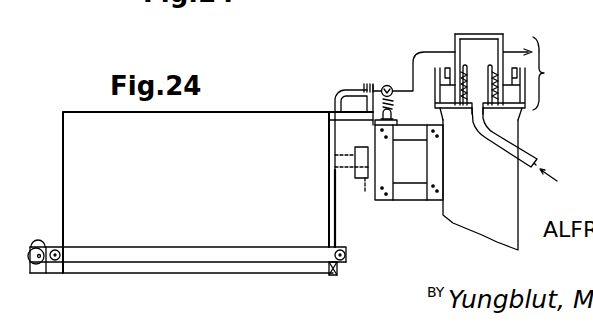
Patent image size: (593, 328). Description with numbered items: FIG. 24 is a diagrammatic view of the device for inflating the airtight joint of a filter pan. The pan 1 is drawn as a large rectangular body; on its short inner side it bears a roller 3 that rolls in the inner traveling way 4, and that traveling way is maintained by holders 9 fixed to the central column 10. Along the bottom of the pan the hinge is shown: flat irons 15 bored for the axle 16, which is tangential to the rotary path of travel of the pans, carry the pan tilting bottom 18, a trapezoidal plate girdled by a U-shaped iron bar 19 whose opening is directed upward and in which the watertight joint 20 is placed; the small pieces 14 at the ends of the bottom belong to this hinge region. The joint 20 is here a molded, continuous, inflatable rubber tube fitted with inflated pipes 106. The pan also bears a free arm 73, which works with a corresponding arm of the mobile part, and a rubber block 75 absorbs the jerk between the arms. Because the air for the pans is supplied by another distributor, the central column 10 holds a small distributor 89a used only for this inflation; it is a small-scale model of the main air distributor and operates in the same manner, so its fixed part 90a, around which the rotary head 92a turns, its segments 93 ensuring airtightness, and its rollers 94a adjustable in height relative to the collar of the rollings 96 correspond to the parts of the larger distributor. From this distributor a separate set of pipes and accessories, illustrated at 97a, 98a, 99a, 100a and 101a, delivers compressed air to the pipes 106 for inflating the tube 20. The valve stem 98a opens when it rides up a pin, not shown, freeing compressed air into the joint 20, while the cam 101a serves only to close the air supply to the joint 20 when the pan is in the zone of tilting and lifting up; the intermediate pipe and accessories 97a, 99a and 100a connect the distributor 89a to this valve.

The housing 1 is at (197, 194).
The roller 3 is at (361, 167).
The traveling way 4 is at (364, 194).
The holders 9 is at (402, 141).
The central column 10 is at (493, 188).
The bracket 14 is at (58, 263).
The flat irons 15 is at (33, 250).
The axle 16 is at (34, 260).
The pan tilting bottom 18 is at (187, 276).
The U-shaped iron bar 19 is at (55, 250).
The watertight joint 20 is at (55, 261).
The free arms 73 is at (370, 107).
The rubber block 75 is at (365, 89).
The small distributor 89a is at (552, 73).
The plunger 90a is at (491, 65).
The manifold 92a is at (454, 36).
The segments 93 is at (457, 60).
The outlet 94a is at (513, 70).
The rollings 96 is at (517, 86).
The set of pipes and accessories 97a is at (414, 70).
The valve stem 98a is at (383, 87).
The set of pipes and accessories 99a is at (393, 104).
The set of pipes and accessories 100a is at (393, 116).
The cam 101a is at (373, 121).
The inflated pipes 106 is at (338, 234).